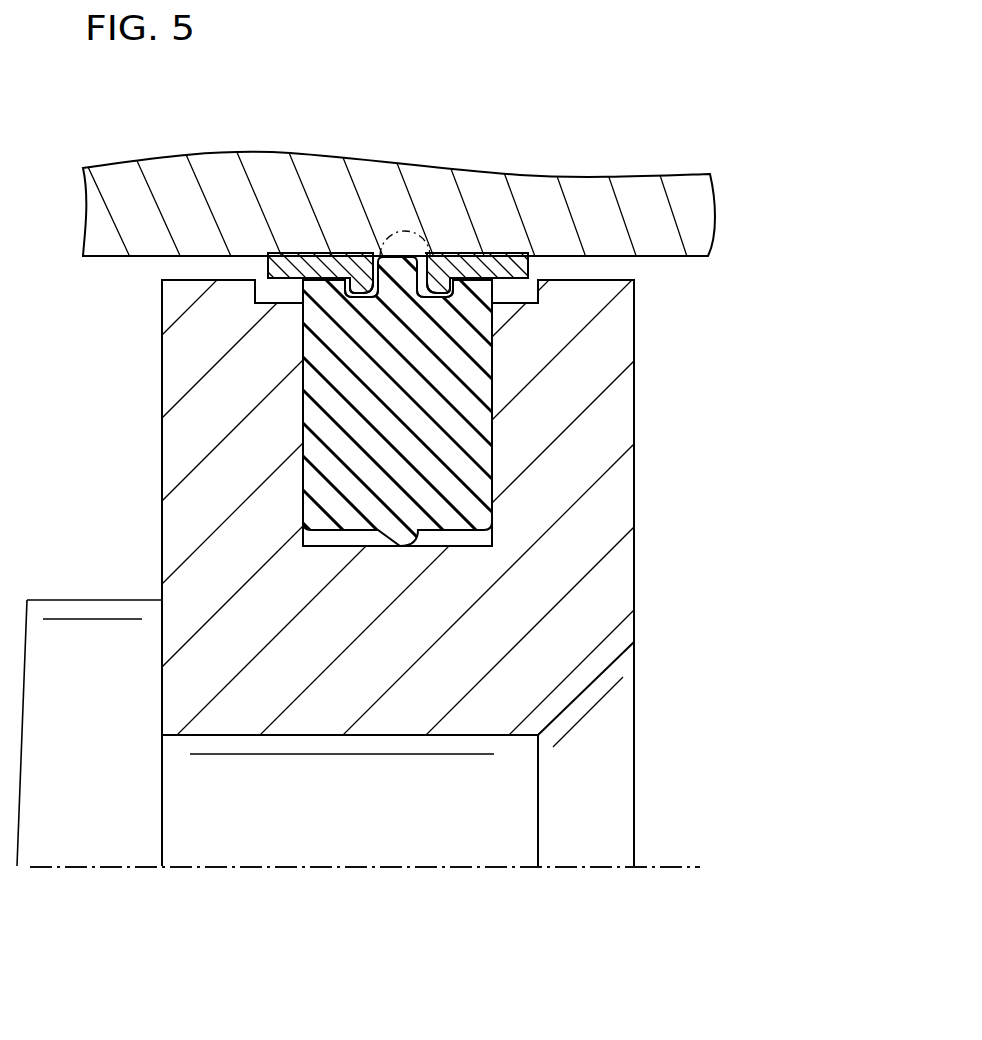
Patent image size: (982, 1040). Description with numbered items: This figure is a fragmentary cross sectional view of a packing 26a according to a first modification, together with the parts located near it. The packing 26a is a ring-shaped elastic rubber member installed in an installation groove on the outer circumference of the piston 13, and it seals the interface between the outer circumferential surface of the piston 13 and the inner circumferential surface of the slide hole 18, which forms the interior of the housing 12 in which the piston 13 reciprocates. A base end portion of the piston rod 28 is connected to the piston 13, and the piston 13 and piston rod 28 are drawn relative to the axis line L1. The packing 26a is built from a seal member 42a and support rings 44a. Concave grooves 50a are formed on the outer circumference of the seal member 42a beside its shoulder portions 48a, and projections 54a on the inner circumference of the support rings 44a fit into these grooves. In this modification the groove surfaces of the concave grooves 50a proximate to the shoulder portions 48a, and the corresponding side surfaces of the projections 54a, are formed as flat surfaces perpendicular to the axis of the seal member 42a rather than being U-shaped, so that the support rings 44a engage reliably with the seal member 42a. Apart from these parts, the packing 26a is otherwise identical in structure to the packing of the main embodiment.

The housing 12 is at (693, 210).
The slide hole 18 is at (699, 258).
The piston 13 is at (628, 507).
The piston rod 28 is at (176, 461).
The packing 26a is at (497, 349).
The seal member 42a is at (478, 436).
The concave grooves 50a is at (358, 282).
The support rings 44a is at (297, 266).
The shoulder portions 48a is at (320, 280).
The projections 54a is at (362, 278).
The axis line L1 is at (673, 866).